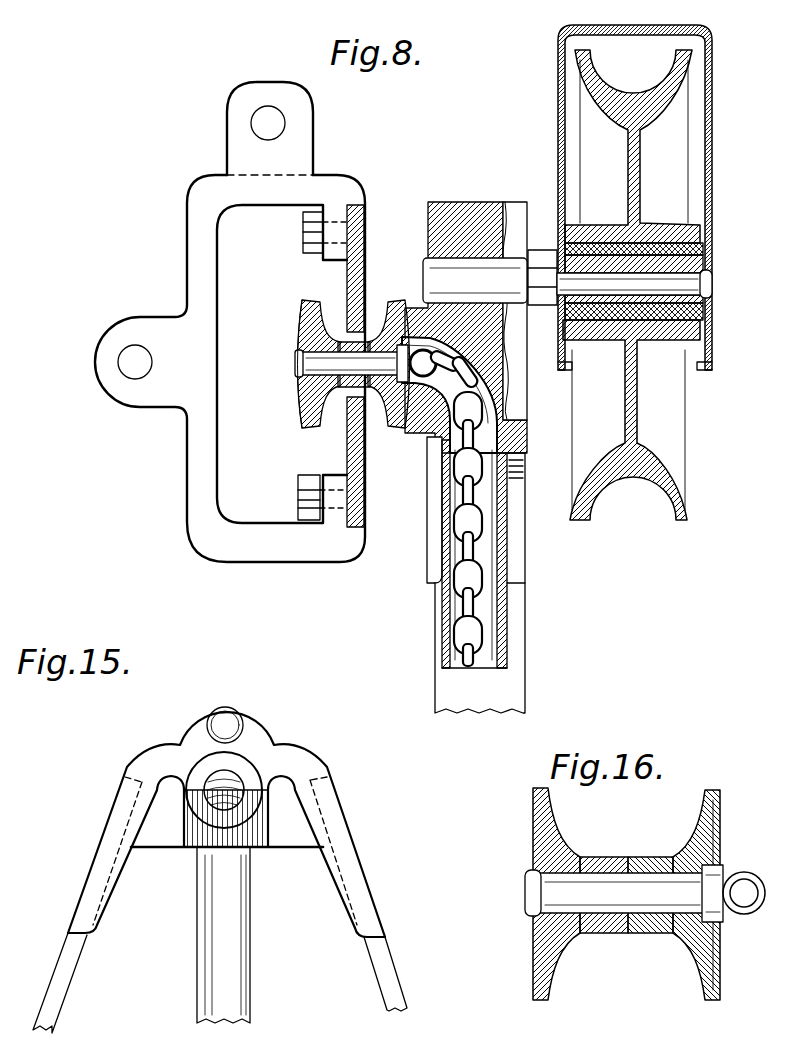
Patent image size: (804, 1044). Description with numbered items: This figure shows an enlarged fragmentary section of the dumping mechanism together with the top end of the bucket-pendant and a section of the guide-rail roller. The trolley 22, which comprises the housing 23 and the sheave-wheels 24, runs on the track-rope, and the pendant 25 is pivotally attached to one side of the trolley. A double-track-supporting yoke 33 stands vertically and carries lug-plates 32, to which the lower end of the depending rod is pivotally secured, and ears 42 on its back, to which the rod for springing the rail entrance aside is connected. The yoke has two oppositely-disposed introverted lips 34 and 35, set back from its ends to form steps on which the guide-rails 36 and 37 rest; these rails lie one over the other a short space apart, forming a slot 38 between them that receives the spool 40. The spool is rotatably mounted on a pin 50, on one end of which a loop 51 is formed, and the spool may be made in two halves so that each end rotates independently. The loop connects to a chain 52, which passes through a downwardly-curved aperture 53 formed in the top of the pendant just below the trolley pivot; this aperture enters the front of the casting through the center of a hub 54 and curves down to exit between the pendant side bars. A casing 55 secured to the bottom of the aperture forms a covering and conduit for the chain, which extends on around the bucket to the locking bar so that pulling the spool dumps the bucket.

In FIG. 8, the trolley 22 is at (610, 146).
In FIG. 8, the housing 23 is at (712, 128).
In FIG. 8, the sheave-wheels 24 is at (657, 413).
In FIG. 8, the pendant 25 is at (510, 693).
In FIG. 15, the pendant 25 is at (58, 975).
In FIG. 8, the lug-plates 32 is at (290, 130).
In FIG. 8, the double-track-supporting yoke 33 is at (187, 255).
In FIG. 8, the introverted lip 34 is at (345, 212).
In FIG. 8, the introverted lip 35 is at (320, 518).
In FIG. 8, the guide-rail 36 is at (366, 298).
In FIG. 8, the guide-rail 37 is at (366, 458).
In FIG. 8, the slot 38 is at (350, 393).
In FIG. 8, the spool 40 is at (300, 320).
In FIG. 16, the spool 40 is at (533, 822).
In FIG. 8, the ears 42 is at (130, 385).
In FIG. 8, the pin 50 is at (318, 363).
In FIG. 16, the pin 50 is at (624, 893).
In FIG. 8, the loop 51 is at (402, 398).
In FIG. 16, the loop 51 is at (750, 873).
In FIG. 8, the chain 52 is at (460, 602).
In FIG. 8, the downwardly-curved aperture 53 is at (478, 385).
In FIG. 15, the downwardly-curved aperture 53 is at (243, 773).
In FIG. 8, the hub 54 is at (425, 452).
In FIG. 15, the hub 54 is at (197, 835).
In FIG. 8, the casing 55 is at (507, 606).
In FIG. 15, the casing 55 is at (220, 927).